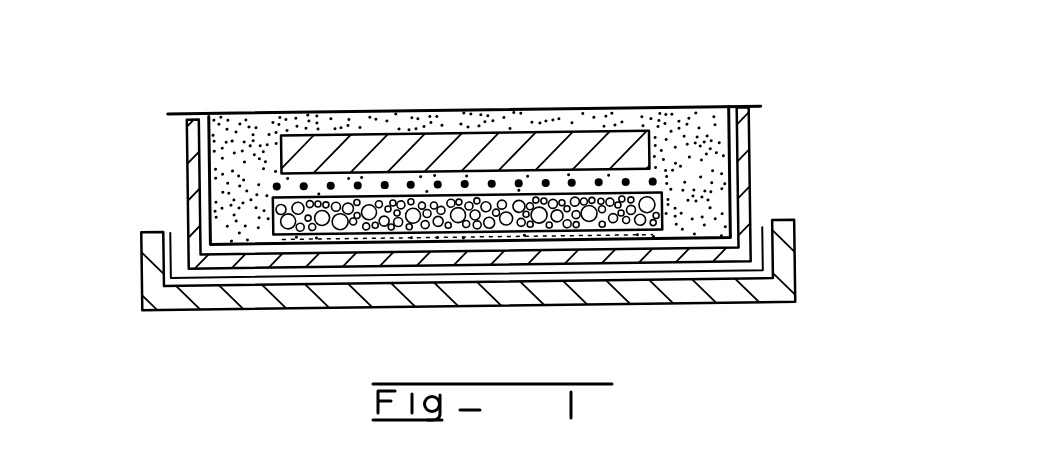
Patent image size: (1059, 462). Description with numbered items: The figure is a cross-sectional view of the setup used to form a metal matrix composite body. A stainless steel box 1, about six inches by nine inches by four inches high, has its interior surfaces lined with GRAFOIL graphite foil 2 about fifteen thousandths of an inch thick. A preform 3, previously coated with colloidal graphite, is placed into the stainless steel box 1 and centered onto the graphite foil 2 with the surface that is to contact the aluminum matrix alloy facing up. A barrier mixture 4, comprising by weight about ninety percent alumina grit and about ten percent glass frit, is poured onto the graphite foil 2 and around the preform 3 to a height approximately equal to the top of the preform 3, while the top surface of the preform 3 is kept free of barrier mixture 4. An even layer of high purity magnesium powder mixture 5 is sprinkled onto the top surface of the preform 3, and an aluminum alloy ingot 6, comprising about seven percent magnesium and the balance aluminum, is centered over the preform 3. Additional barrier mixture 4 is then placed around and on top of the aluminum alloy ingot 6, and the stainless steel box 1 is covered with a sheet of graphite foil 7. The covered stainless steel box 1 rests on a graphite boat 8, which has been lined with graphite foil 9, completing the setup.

The stainless steel box 1 is at (751, 158).
The graphite foil 2 is at (213, 127).
The preform 3 is at (273, 205).
The barrier mixture 4 is at (692, 126).
The magnesium powder mixture 5 is at (653, 186).
The aluminum alloy ingot 6 is at (394, 139).
The graphite foil 7 is at (511, 111).
The graphite boat 8 is at (296, 293).
The graphite foil 9 is at (173, 234).